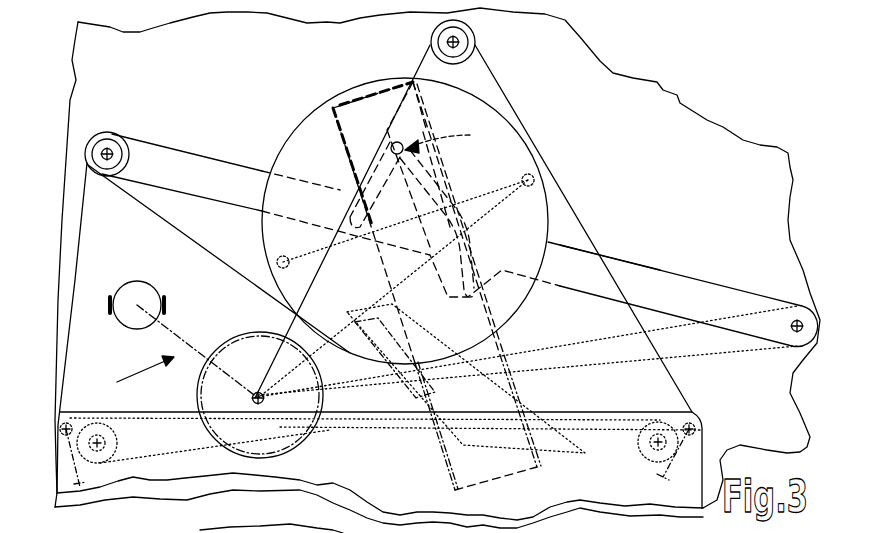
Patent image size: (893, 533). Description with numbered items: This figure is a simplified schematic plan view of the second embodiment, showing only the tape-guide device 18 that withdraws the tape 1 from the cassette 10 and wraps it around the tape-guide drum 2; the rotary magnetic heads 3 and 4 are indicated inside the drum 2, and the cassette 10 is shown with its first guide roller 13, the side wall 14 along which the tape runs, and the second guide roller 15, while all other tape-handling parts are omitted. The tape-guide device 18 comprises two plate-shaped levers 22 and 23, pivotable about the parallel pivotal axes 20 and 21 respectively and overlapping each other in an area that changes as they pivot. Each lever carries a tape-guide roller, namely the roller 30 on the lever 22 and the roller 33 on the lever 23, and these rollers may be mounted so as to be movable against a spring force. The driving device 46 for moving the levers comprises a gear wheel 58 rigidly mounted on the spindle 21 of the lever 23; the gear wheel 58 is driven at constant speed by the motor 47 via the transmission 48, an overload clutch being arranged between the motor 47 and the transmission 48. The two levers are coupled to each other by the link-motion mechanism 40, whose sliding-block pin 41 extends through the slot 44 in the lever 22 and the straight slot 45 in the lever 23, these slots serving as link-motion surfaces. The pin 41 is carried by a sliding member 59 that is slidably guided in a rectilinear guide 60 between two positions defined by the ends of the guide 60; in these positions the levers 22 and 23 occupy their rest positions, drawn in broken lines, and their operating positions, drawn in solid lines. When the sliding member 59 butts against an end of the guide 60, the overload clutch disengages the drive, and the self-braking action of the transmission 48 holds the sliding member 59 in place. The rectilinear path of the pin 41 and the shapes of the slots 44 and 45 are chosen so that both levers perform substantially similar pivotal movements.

The magnetizable record carrier 1 is at (185, 210).
The tape-guide drum 2 is at (287, 133).
The rotary magnetic head 3 is at (284, 257).
The rotary magnetic head 4 is at (526, 176).
The cassette 10 is at (708, 450).
The first guide roller 13 is at (65, 422).
The side wall 14 is at (577, 408).
The second guide roller 15 is at (692, 420).
The tape-guide device 18 is at (180, 133).
The pivotal axis 20 is at (796, 320).
The pivotal axis 21 is at (256, 392).
The plate-shaped lever 22 is at (653, 277).
The plate-shaped lever 23 is at (283, 325).
The tape-guide roller 30 is at (108, 150).
The tape-guide roller 33 is at (465, 36).
The link-motion mechanism 40 is at (494, 150).
The sliding-block pin 41 is at (387, 128).
The slot 44 is at (460, 220).
The slot 45 is at (353, 220).
The driving device 46 is at (129, 379).
The motor 47 is at (121, 282).
The transmission 48 is at (172, 332).
The gear wheel 58 is at (207, 388).
The sliding member 59 is at (333, 127).
The rectilinear guide 60 is at (490, 346).